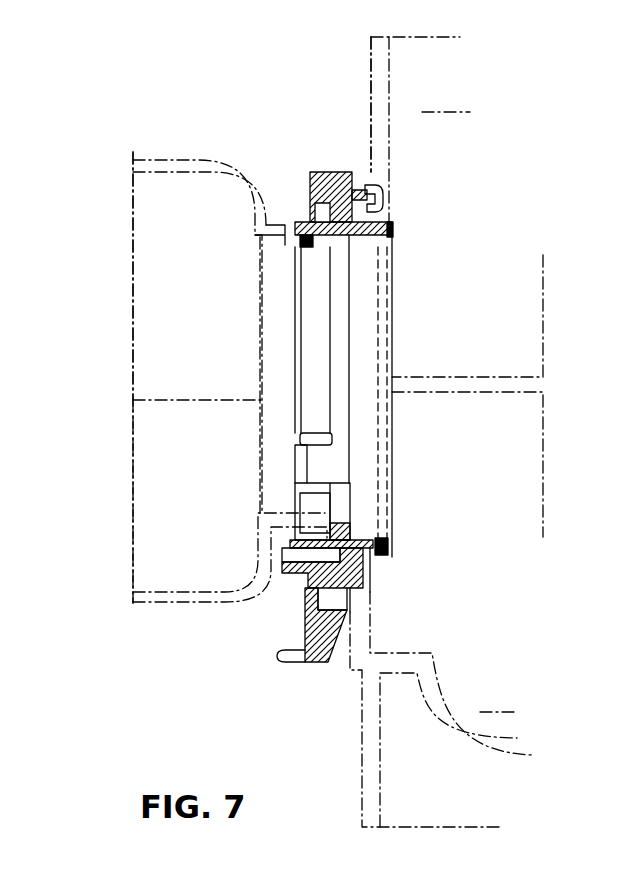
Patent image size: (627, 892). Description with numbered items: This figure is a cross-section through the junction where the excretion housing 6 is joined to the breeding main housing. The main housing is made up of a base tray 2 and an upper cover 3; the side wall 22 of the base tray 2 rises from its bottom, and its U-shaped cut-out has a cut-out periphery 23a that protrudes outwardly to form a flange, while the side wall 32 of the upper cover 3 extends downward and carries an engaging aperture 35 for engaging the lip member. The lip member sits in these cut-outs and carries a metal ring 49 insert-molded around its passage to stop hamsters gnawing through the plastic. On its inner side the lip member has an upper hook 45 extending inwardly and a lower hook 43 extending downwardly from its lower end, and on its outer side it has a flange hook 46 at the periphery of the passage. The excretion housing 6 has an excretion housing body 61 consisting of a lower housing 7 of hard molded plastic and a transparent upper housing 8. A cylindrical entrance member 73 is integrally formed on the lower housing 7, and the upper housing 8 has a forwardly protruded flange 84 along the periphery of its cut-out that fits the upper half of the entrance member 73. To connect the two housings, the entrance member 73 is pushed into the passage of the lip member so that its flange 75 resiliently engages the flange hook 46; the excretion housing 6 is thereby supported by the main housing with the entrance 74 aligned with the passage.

The base tray 2 is at (451, 709).
The upper cover 3 is at (457, 287).
The excretion housing 6 is at (165, 153).
The excretion housing body 61 is at (230, 387).
The lower housing 7 is at (143, 508).
The upper housing 8 is at (144, 292).
The side wall 22 is at (363, 725).
The cut-out periphery 23a is at (340, 598).
The side wall 32 is at (372, 92).
The engaging aperture 35 is at (395, 212).
The lower hook 43 is at (295, 658).
The upper hook 45 is at (384, 197).
The flange hook 46 is at (298, 222).
The metal ring 49 is at (377, 552).
The entrance member 73 is at (272, 576).
The entrance 74 is at (272, 448).
The flange 75 is at (330, 516).
The flange 84 is at (273, 228).